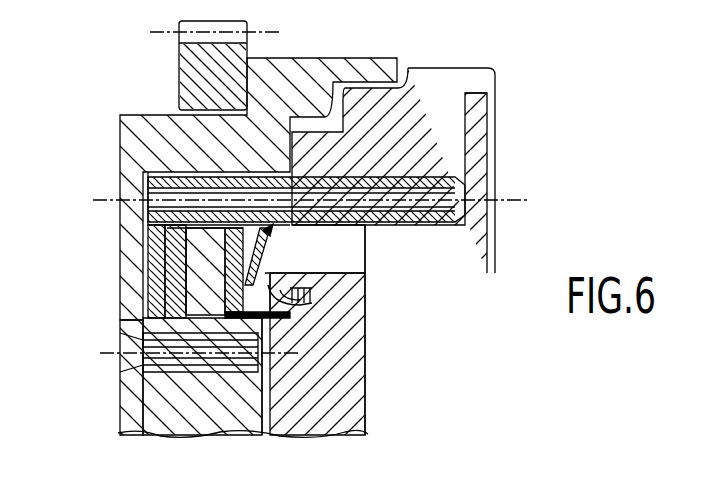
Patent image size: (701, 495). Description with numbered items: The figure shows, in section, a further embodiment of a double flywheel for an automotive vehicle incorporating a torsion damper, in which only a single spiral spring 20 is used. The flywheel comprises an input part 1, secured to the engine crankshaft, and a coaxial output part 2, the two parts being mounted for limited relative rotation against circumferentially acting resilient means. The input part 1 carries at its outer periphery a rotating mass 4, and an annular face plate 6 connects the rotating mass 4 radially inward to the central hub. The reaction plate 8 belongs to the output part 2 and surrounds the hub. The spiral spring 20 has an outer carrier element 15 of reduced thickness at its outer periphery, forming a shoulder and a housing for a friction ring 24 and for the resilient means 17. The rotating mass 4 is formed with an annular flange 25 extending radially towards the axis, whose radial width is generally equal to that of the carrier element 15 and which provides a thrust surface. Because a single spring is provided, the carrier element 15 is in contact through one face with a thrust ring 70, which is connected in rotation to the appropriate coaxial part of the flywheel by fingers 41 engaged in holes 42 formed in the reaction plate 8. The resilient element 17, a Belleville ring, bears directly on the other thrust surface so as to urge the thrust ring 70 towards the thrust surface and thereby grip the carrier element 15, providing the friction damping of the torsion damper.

The input part 1 is at (110, 150).
The output part 2 is at (375, 375).
The rotating mass 4 is at (350, 58).
The annular face plate 6 is at (140, 407).
The reaction plate 8 is at (368, 390).
The outer carrier element 15 is at (205, 258).
The resilient means 17 is at (370, 270).
The spiral spring 20 is at (172, 388).
The friction ring 24 is at (184, 255).
The annular flange 25 is at (152, 282).
The fingers 41 is at (340, 335).
The holes 42 is at (315, 292).
The thrust ring 70 is at (272, 228).